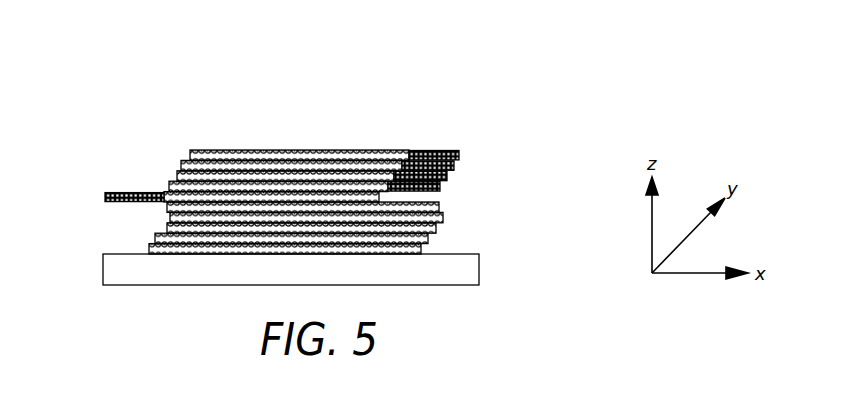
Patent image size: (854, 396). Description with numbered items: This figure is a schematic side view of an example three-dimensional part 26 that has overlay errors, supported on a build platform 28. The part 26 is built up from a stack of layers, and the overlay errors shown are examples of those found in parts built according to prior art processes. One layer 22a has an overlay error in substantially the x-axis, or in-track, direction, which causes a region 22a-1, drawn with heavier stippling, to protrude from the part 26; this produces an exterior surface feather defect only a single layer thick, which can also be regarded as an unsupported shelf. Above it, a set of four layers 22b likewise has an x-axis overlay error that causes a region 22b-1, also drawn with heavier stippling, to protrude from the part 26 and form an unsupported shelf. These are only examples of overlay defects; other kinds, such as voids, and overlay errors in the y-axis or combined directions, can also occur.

The layer 22a is at (203, 161).
The region 22a-1 is at (160, 184).
The set of four layers 22b is at (362, 138).
The region 22b-1 is at (464, 142).
The 3D part 26 is at (292, 153).
The build platform 28 is at (472, 267).